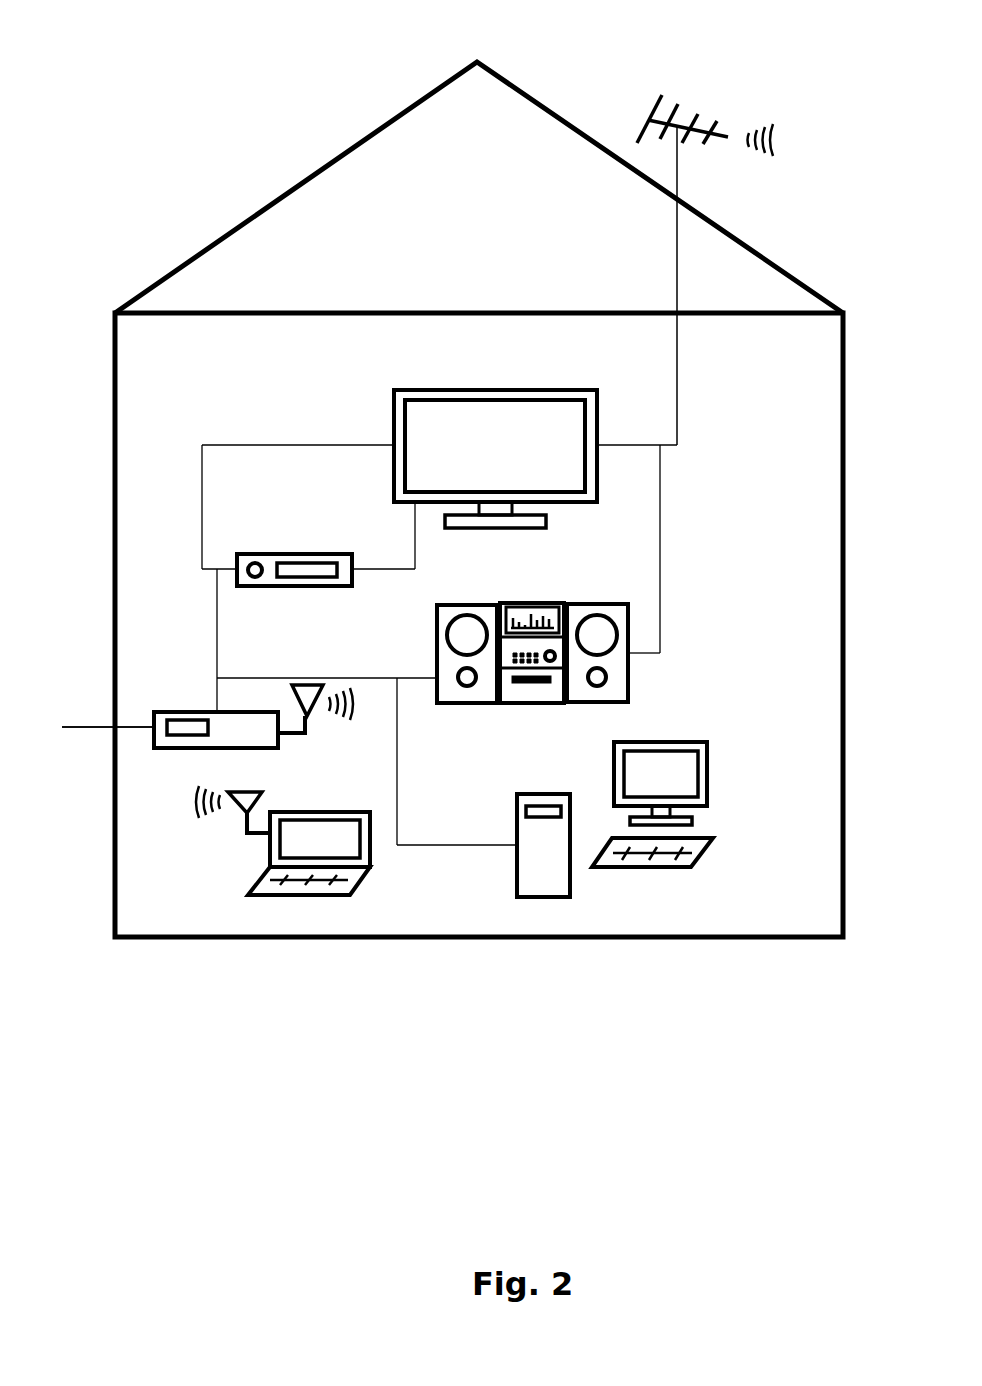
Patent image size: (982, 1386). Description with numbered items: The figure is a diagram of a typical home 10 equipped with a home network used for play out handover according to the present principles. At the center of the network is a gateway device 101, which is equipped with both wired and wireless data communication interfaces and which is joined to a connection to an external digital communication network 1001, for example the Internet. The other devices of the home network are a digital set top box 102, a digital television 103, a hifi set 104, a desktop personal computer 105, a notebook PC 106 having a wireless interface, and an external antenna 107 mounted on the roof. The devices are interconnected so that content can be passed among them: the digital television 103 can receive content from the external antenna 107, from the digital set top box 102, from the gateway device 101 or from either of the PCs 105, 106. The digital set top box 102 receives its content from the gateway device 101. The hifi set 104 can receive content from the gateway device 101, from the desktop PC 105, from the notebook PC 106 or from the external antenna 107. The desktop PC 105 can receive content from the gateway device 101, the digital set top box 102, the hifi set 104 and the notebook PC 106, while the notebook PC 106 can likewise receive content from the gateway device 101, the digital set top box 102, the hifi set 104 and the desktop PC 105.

The home 10 is at (310, 164).
The gateway device 101 is at (178, 712).
The digital set top box 102 is at (297, 557).
The digital television 103 is at (393, 426).
The hifi set 104 is at (620, 604).
The desktop personal computer 105 is at (513, 827).
The notebook PC 106 is at (265, 858).
The external antenna 107 is at (677, 89).
The external digital communication network 1001 is at (83, 726).